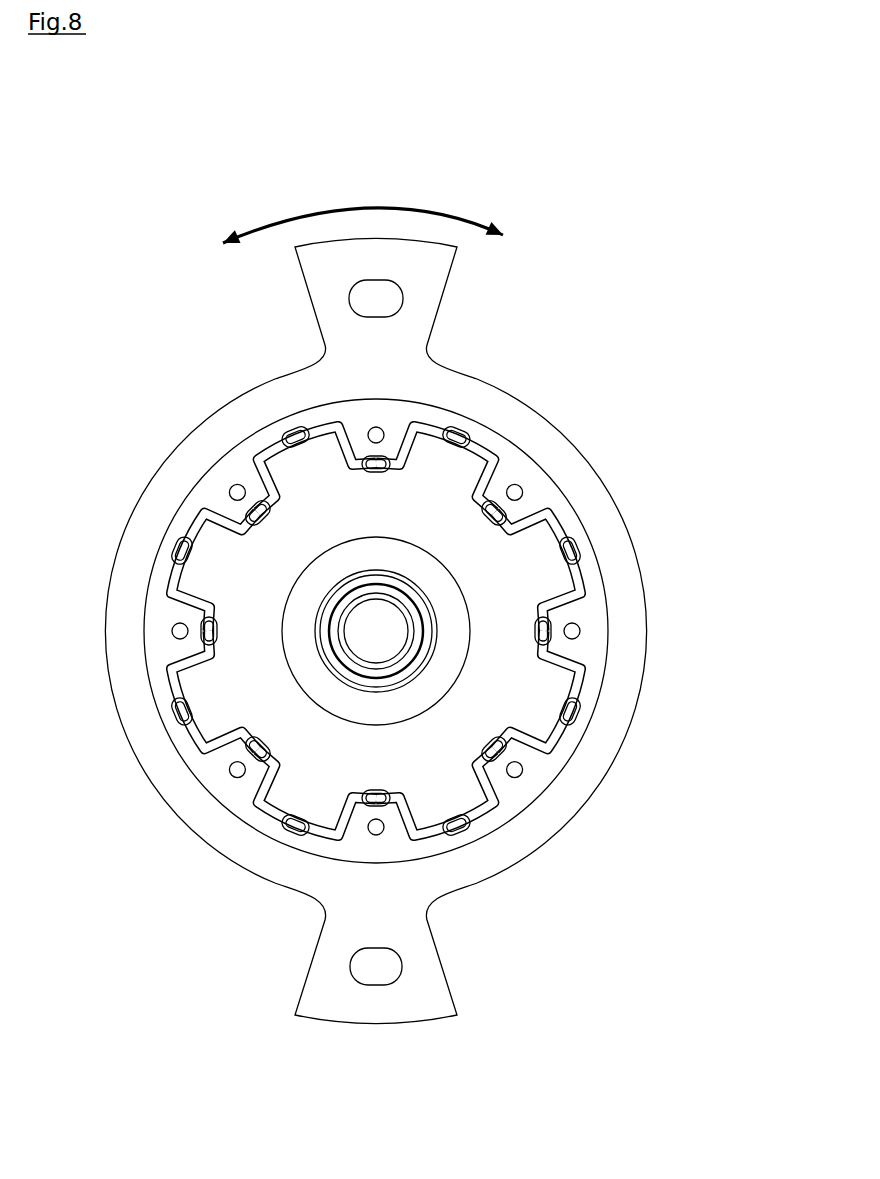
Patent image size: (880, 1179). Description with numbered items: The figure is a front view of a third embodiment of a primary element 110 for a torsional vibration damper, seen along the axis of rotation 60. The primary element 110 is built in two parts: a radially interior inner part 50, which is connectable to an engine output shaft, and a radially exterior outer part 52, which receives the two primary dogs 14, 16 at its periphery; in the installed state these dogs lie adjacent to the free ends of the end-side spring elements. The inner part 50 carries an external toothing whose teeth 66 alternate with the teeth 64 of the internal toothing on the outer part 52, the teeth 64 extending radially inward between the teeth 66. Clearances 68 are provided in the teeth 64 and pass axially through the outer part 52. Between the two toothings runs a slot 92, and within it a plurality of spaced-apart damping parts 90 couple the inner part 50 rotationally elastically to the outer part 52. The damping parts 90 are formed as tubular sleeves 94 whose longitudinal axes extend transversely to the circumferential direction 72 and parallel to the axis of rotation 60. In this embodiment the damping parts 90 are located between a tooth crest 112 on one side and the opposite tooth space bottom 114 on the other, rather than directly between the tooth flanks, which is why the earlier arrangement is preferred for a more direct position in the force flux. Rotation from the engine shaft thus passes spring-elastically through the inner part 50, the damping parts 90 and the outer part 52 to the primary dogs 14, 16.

The primary dog 14 is at (417, 296).
The primary dog 16 is at (413, 967).
The inner part 50 is at (312, 742).
The outer part 52 is at (250, 843).
The axis of rotation 60 is at (376, 632).
The teeth of the internal toothing 64 is at (262, 490).
The teeth of the external toothing 66 is at (212, 693).
The clearances 68 is at (232, 490).
The circumferential direction 72 is at (365, 208).
The damping parts 90 is at (478, 436).
The slot 92 is at (488, 815).
The tubular sleeves 94 is at (505, 750).
The primary element 110 is at (566, 354).
The tooth crest 112 is at (522, 670).
The tooth space bottom 114 is at (522, 670).